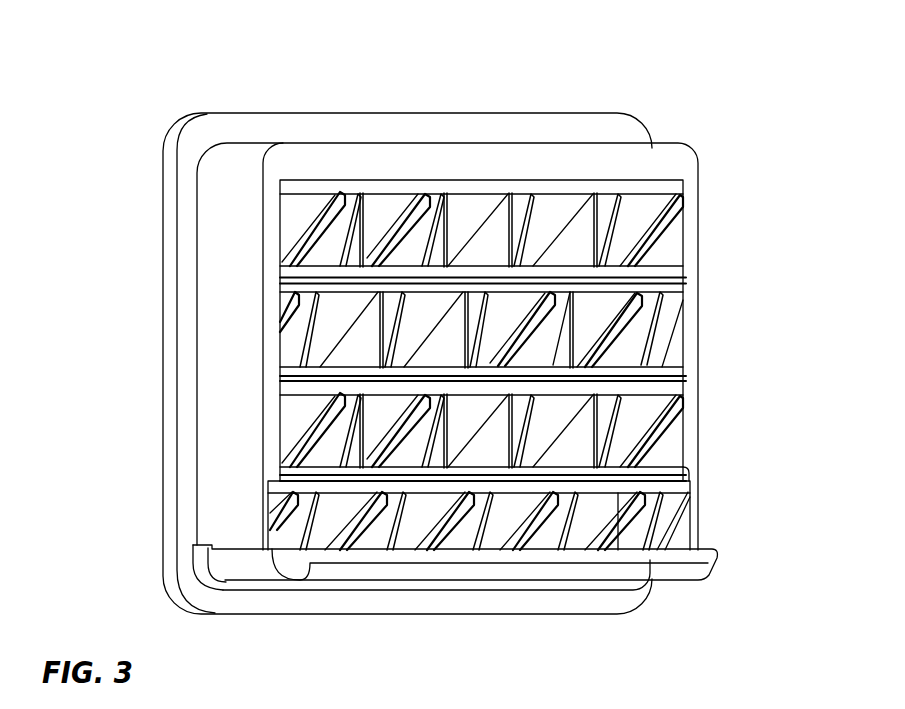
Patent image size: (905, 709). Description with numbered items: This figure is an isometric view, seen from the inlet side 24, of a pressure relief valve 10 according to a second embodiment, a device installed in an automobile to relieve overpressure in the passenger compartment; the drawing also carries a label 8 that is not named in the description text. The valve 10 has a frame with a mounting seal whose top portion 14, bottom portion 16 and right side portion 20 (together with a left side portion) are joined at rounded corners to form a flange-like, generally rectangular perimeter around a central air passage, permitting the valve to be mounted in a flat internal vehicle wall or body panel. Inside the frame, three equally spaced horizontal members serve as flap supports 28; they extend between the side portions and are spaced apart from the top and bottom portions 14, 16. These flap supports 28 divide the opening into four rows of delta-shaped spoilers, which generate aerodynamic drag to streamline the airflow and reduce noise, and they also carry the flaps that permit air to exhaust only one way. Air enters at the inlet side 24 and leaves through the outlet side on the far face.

The pressure relief valve 10 is at (100, 86).
The housing 8 is at (218, 303).
The top portion 14 is at (345, 158).
The flap supports 28 is at (416, 275).
The right side portion 20 is at (695, 459).
The bottom portion 16 is at (485, 590).
The inlet side 24 is at (680, 621).